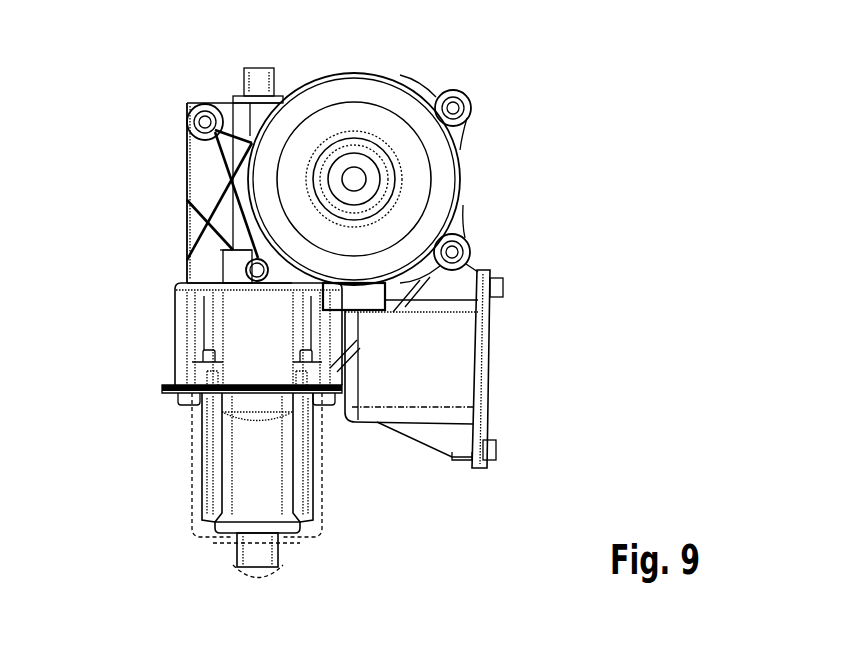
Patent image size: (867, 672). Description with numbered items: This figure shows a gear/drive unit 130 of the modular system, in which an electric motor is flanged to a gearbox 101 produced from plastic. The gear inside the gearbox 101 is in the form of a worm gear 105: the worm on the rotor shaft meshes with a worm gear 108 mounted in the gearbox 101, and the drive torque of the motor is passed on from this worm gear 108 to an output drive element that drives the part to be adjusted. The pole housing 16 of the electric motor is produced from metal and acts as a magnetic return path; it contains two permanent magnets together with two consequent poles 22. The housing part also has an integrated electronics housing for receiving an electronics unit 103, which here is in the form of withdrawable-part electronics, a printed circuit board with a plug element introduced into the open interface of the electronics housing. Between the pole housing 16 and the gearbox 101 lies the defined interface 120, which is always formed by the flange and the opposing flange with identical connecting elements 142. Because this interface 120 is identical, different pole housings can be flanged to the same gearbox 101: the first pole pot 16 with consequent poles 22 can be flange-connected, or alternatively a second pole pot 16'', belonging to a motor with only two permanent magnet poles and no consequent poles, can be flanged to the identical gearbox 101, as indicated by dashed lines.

The gearbox 101 is at (294, 76).
The worm gear 105 is at (292, 290).
The gear/drive unit 130 is at (156, 100).
The worm gear 108 is at (427, 198).
The defined interface 120 is at (150, 390).
The connecting elements 142 is at (187, 403).
The consequent poles 22 is at (247, 470).
The pole housing 16 is at (284, 457).
The second pole pot 16'' is at (284, 485).
The electronics unit 103 is at (403, 393).